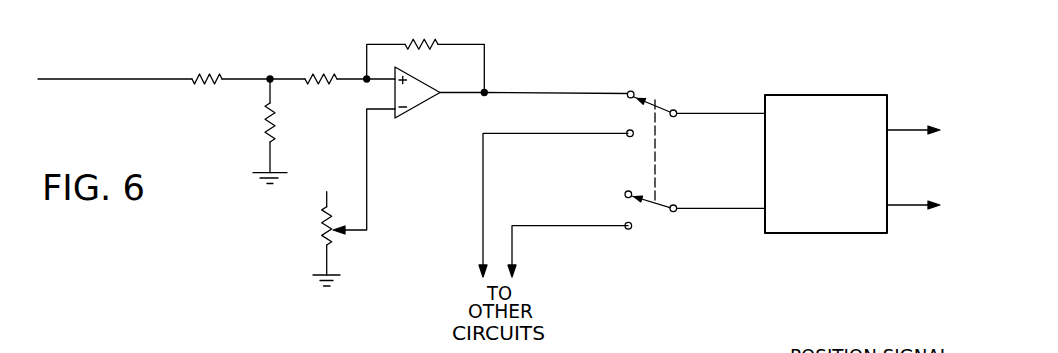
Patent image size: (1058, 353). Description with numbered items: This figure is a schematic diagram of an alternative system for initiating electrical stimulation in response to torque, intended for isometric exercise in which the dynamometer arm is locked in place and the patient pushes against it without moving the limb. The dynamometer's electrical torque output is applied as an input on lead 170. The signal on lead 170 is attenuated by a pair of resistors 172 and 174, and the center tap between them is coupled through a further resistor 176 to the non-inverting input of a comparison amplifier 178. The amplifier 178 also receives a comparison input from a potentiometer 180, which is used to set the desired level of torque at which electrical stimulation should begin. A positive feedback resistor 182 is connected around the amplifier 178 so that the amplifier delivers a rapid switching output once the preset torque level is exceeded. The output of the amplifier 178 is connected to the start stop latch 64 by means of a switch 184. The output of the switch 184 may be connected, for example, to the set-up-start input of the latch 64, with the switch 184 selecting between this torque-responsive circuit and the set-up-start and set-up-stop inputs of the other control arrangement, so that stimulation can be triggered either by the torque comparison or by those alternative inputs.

The start stop latch 64 is at (822, 95).
The lead 170 is at (143, 80).
The resistor 172 is at (208, 75).
The resistor 174 is at (263, 122).
The resistor 176 is at (316, 75).
The comparison amplifier 178 is at (413, 110).
The potentiometer 180 is at (323, 225).
The positive feedback resistor 182 is at (427, 37).
The switch 184 is at (657, 147).